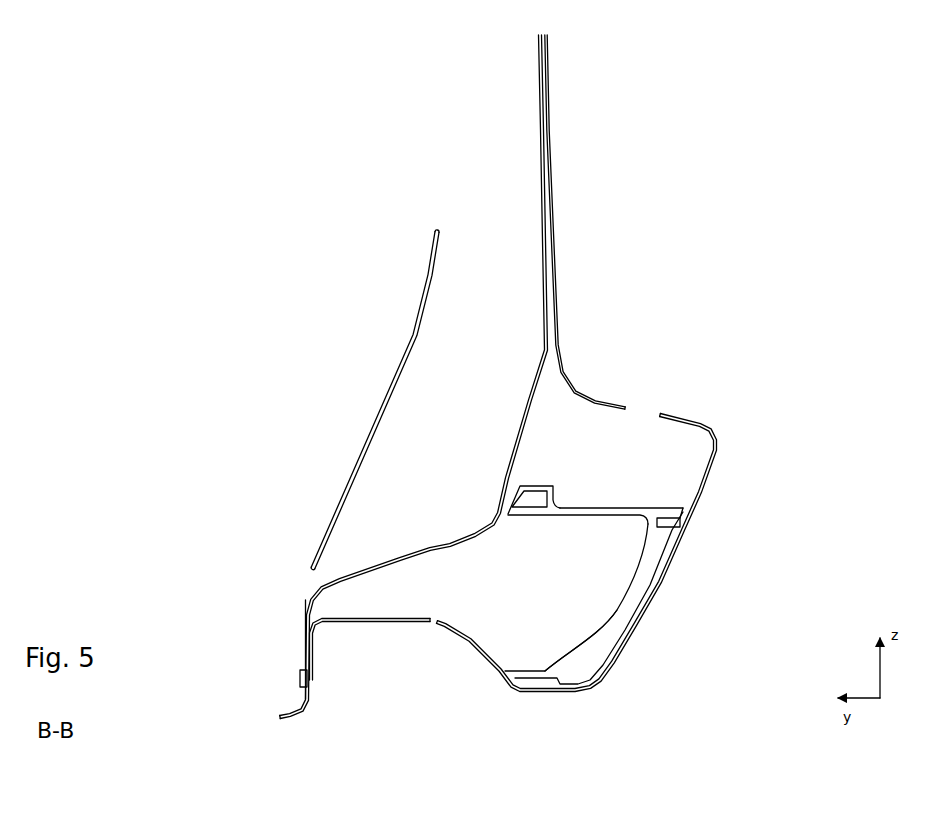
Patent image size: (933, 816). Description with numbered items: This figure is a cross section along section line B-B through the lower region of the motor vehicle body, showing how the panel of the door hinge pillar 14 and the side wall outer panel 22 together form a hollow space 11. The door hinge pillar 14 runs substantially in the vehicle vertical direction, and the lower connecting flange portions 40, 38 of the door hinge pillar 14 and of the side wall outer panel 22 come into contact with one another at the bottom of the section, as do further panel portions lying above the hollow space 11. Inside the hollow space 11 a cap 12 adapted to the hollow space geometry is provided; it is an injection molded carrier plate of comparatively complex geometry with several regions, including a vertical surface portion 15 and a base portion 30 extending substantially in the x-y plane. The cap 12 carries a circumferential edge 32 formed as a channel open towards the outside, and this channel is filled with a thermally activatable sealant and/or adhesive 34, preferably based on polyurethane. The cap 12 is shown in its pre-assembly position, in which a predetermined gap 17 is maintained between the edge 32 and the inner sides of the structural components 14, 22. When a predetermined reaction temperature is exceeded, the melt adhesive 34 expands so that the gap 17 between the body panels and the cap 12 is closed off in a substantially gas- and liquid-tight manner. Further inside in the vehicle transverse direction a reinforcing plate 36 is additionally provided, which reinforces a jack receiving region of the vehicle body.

The hollow space 11 is at (581, 430).
The cap 12 is at (583, 610).
The door hinge pillar 14 is at (532, 414).
The vertical surface portion 15 is at (620, 622).
The gap 17 is at (503, 500).
The side wall outer panel 22 is at (686, 418).
The base portion 30 is at (620, 505).
The edge 32 is at (515, 530).
The thermally activatable sealant and/or adhesive 34 is at (535, 516).
The reinforcing plate 36 is at (395, 380).
The lower connecting flange portion 38 is at (307, 678).
The lower connecting flange portion 40 is at (306, 620).